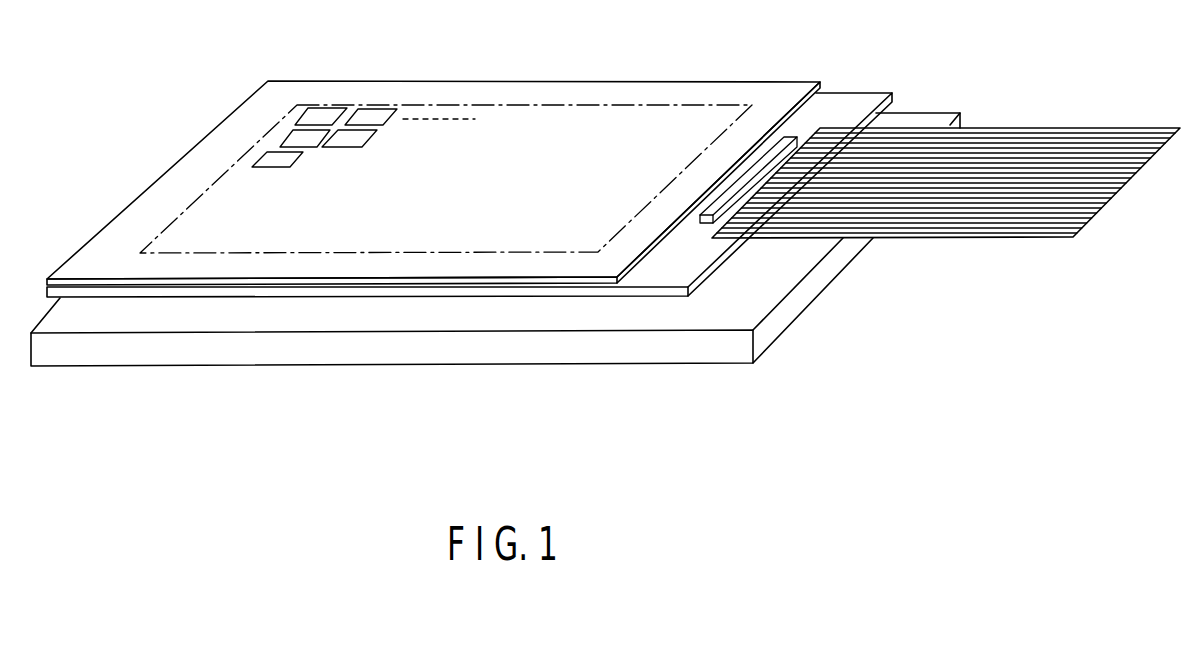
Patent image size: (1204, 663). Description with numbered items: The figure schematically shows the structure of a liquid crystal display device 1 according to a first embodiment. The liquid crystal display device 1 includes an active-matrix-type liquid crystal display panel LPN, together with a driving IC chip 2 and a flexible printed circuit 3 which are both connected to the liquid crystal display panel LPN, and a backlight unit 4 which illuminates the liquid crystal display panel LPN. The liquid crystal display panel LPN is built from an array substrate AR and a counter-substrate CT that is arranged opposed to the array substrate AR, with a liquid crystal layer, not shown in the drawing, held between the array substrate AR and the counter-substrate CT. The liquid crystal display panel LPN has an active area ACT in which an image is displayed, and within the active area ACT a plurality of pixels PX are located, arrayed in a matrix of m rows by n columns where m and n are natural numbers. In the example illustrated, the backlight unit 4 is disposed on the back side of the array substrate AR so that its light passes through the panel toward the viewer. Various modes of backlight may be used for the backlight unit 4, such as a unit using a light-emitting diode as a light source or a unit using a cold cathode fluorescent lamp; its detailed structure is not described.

The liquid crystal display device 1 is at (912, 50).
The driving IC chip 2 is at (782, 143).
The flexible printed circuit 3 is at (1108, 127).
The backlight unit 4 is at (55, 353).
The pixel PX is at (325, 116).
The active area ACT is at (368, 257).
The counter-substrate CT is at (473, 283).
The array substrate AR is at (538, 292).
The liquid crystal display panel LPN is at (660, 297).